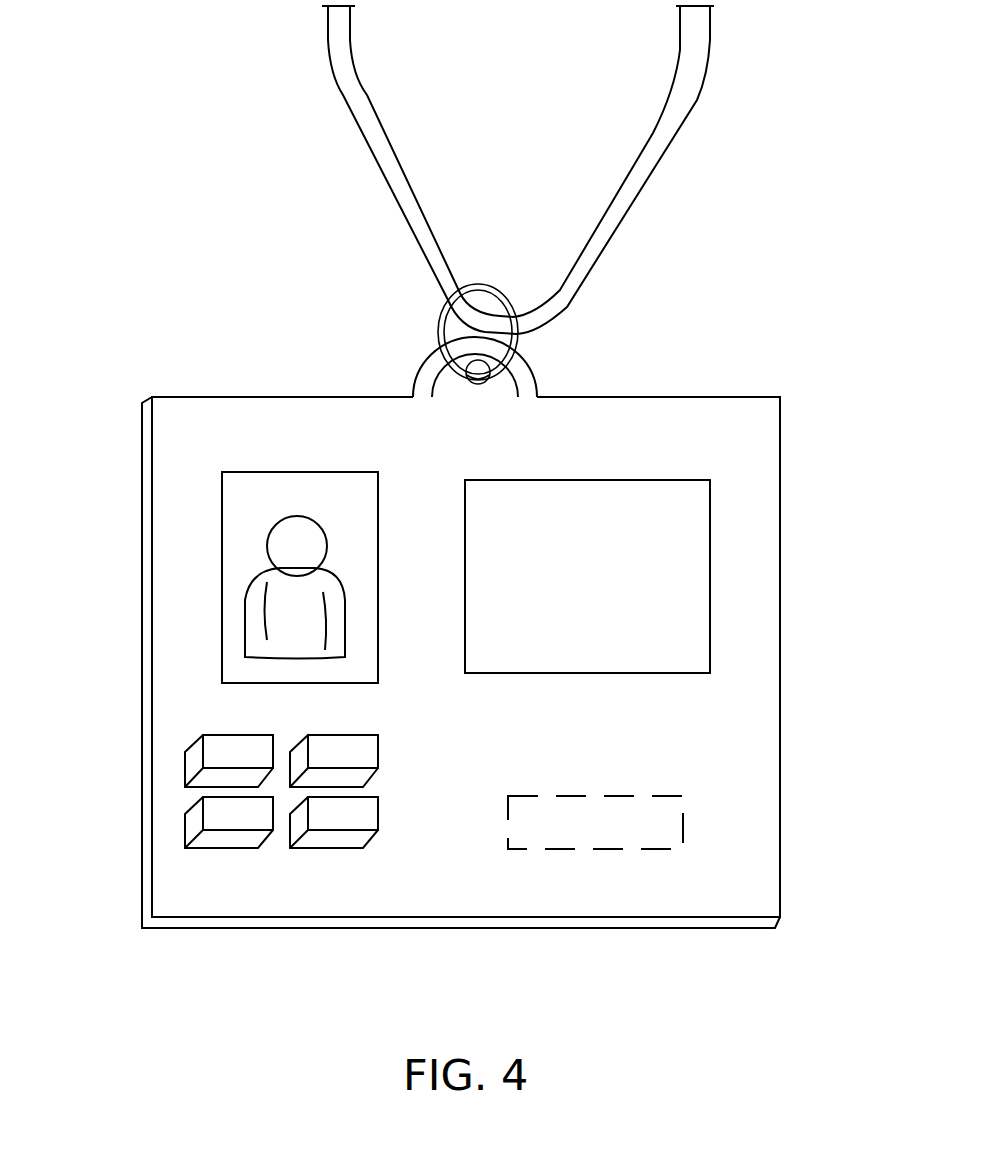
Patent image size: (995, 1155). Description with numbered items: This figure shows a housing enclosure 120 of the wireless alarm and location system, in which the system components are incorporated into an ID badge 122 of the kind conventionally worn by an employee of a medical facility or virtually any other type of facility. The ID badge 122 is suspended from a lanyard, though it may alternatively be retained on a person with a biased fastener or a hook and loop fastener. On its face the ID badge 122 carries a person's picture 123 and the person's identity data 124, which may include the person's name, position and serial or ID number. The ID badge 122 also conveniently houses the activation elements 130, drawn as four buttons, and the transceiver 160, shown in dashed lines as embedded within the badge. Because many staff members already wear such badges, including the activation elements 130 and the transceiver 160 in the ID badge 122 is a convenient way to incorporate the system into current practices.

The housing enclosure 120 is at (796, 221).
The ID badge 122 is at (675, 398).
The person's picture 123 is at (238, 560).
The person's identity data 124 is at (675, 588).
The activation elements 130 is at (281, 791).
The transceiver 160 is at (638, 830).